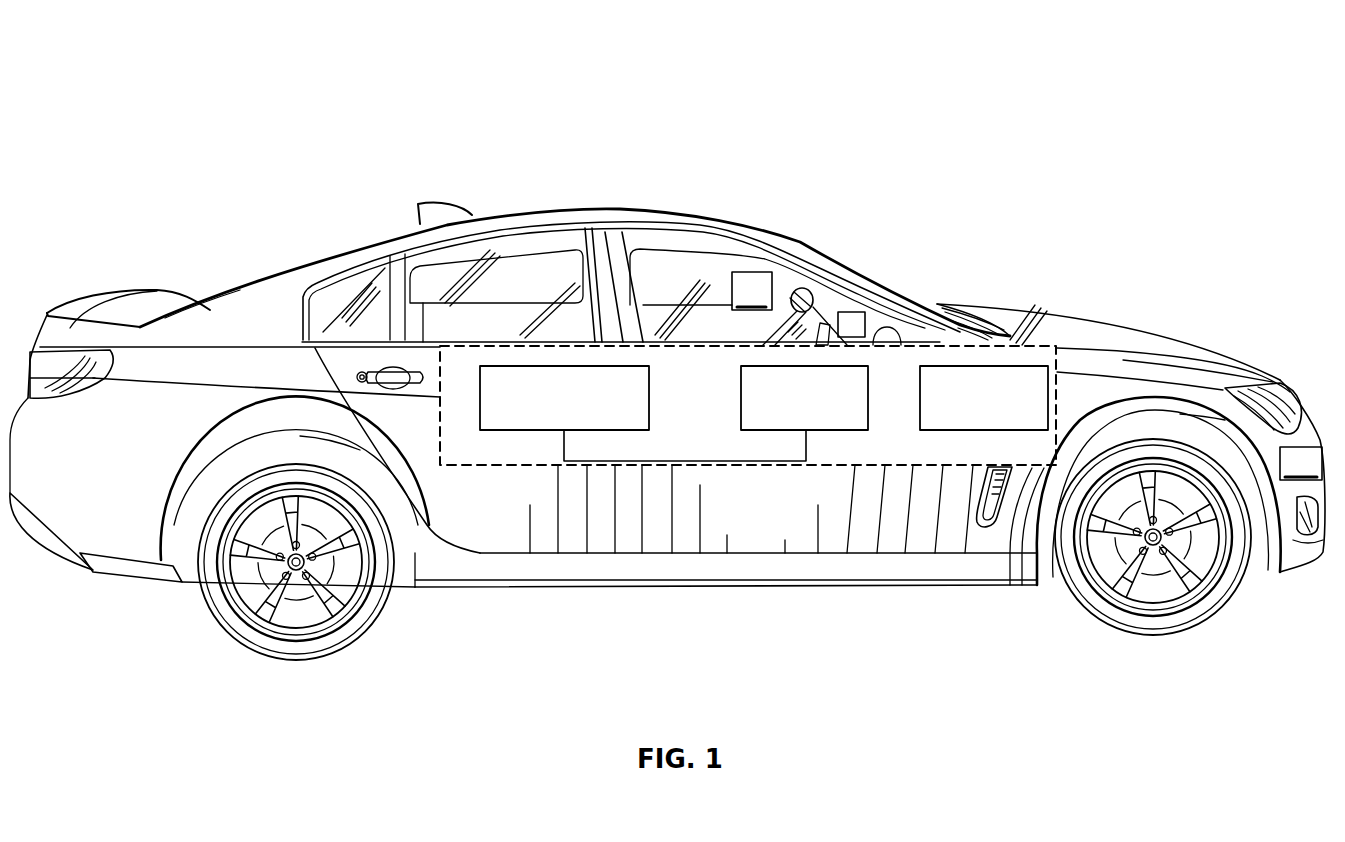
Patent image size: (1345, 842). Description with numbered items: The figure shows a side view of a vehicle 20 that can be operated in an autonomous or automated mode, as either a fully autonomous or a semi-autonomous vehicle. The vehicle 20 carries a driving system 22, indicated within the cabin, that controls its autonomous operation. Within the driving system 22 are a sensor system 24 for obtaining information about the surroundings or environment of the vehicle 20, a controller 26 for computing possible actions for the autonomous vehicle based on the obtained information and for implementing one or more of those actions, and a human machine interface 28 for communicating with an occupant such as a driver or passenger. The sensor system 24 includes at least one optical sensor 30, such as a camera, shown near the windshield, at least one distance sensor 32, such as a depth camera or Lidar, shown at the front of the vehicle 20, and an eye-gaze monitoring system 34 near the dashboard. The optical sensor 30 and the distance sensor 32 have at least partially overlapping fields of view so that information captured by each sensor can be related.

The vehicle 20 is at (1140, 47).
The driving system 22 is at (588, 328).
The sensor system 24 is at (1000, 366).
The controller 26 is at (745, 366).
The human machine interface 28 is at (503, 366).
The optical sensor 30 is at (752, 291).
The distance sensor 32 is at (1301, 463).
The eye-gaze monitoring system 34 is at (852, 312).